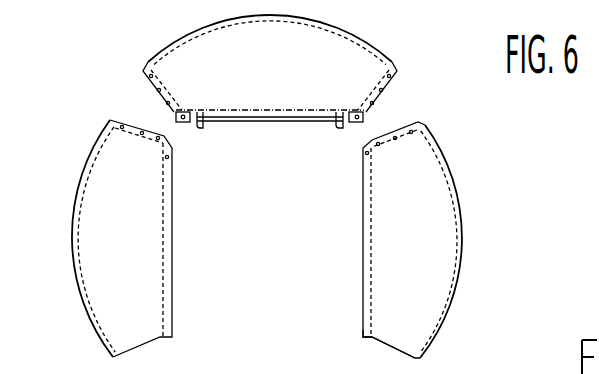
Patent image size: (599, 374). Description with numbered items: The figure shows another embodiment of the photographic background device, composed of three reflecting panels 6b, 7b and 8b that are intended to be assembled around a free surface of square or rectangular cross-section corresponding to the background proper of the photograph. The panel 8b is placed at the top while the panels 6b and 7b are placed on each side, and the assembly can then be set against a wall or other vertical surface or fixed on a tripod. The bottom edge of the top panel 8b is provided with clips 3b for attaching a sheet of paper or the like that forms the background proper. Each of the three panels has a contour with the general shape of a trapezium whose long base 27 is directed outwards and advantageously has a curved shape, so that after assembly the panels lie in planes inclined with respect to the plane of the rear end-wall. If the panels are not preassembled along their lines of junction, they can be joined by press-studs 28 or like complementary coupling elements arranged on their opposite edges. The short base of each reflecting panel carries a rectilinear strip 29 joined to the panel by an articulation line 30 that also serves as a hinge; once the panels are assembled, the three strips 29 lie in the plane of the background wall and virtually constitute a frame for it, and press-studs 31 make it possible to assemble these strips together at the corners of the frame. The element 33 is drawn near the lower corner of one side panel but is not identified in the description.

The top reflecting panel 8b is at (223, 53).
The reflecting panel 6b is at (108, 207).
The reflecting panel 7b is at (435, 203).
The long base 27 is at (352, 35).
The press-studs 28 is at (122, 125).
The rectilinear strip 29 is at (268, 115).
The articulation line 30 is at (378, 298).
The press-studs 31 is at (168, 156).
The bottom edge 33 is at (395, 343).
The clips 3b is at (200, 125).